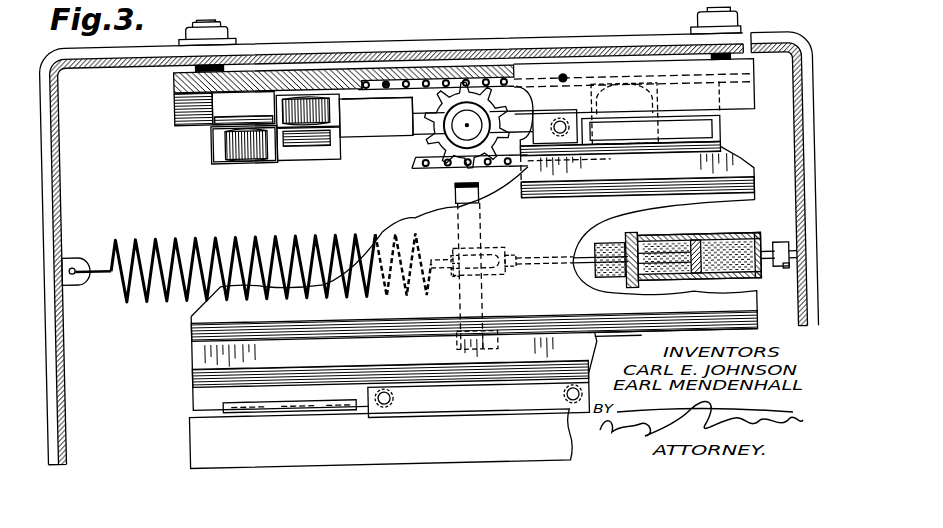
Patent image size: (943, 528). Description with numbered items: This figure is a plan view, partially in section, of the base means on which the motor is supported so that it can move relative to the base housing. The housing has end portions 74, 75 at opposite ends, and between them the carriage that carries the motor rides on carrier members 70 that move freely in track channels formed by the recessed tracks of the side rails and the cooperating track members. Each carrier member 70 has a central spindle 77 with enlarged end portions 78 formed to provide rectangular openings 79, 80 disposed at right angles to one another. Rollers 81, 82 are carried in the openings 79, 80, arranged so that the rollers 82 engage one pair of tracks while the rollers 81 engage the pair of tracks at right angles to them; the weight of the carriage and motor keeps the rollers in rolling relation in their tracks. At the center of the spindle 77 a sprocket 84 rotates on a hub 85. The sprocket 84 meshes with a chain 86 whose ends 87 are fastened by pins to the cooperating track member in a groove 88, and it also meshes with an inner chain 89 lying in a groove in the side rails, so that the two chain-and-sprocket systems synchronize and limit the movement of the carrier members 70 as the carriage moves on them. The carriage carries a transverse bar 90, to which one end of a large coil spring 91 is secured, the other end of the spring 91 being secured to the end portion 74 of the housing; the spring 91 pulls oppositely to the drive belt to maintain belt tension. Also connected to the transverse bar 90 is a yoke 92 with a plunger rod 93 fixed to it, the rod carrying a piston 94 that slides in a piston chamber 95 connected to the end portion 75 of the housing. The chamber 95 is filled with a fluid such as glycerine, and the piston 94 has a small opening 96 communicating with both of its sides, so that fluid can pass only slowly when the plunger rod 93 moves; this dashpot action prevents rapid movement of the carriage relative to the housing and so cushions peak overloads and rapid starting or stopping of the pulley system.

The carrier member 70 is at (387, 129).
The end portion 74 is at (58, 122).
The end portion 75 is at (793, 155).
The central spindle 77 is at (363, 128).
The enlarged end portion 78 is at (279, 155).
The rectangular opening 79 is at (330, 148).
The rectangular opening 80 is at (220, 155).
The roller 81 is at (318, 104).
The roller 82 is at (232, 162).
The sprocket 84 is at (464, 83).
The hub 85 is at (457, 129).
The chain 86 is at (494, 83).
The chain end 87 is at (389, 82).
The groove 88 is at (364, 78).
The inner chain 89 is at (419, 165).
The transverse bar 90 is at (454, 193).
The coil spring 91 is at (154, 237).
The yoke 92 is at (464, 249).
The plunger rod 93 is at (575, 269).
The piston 94 is at (690, 286).
The piston chamber 95 is at (678, 245).
The opening 96 is at (696, 241).